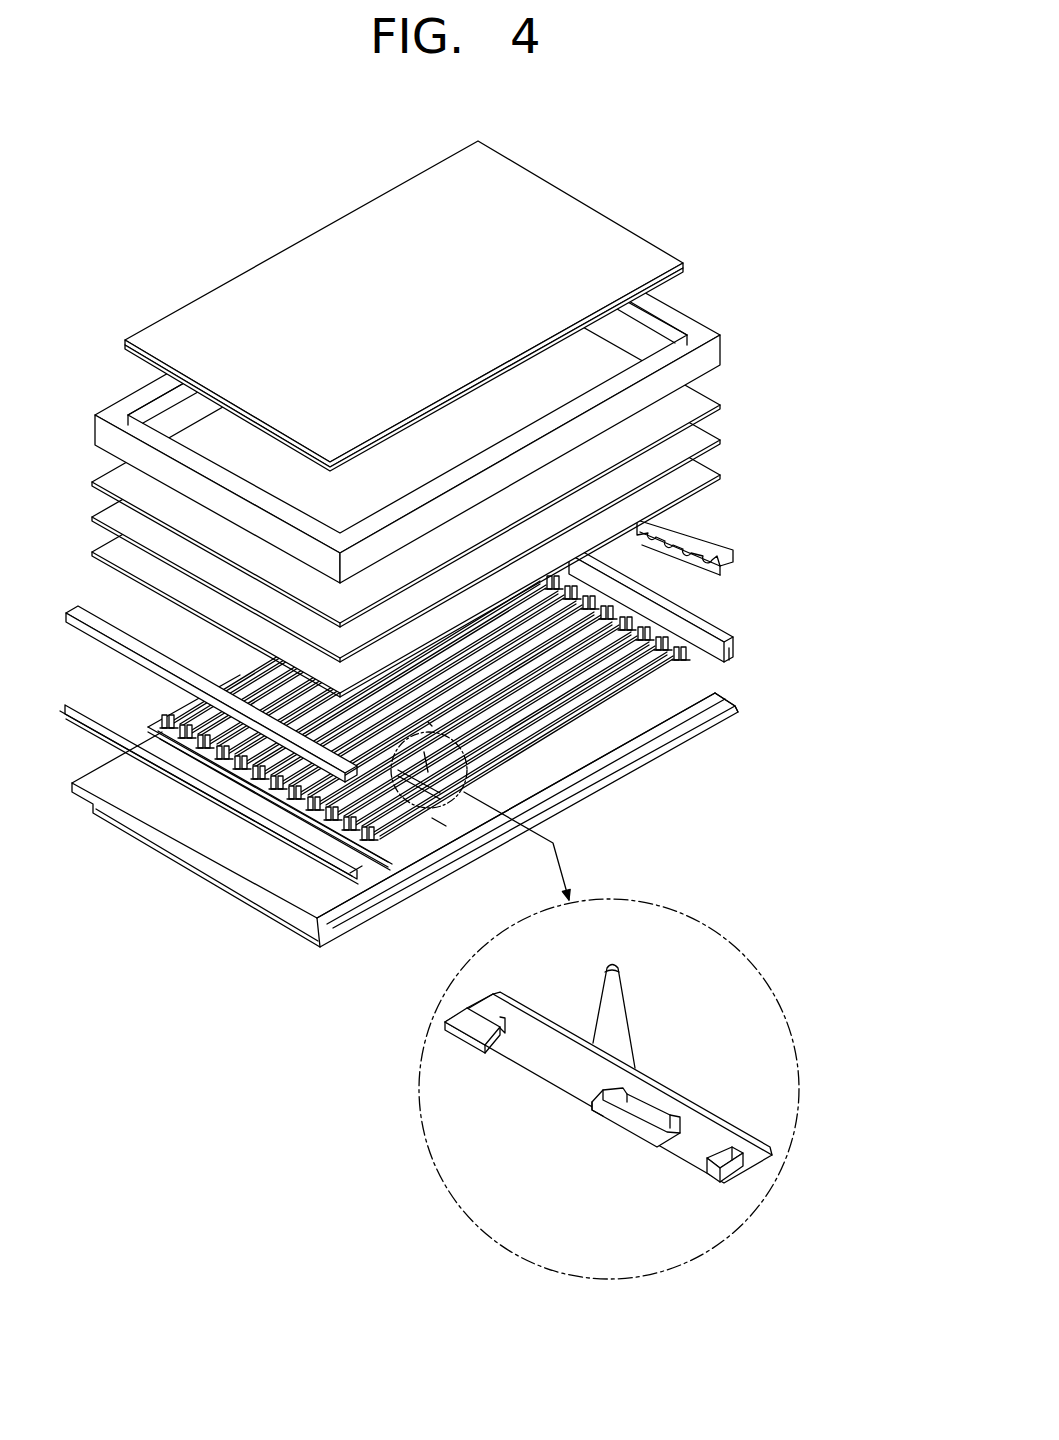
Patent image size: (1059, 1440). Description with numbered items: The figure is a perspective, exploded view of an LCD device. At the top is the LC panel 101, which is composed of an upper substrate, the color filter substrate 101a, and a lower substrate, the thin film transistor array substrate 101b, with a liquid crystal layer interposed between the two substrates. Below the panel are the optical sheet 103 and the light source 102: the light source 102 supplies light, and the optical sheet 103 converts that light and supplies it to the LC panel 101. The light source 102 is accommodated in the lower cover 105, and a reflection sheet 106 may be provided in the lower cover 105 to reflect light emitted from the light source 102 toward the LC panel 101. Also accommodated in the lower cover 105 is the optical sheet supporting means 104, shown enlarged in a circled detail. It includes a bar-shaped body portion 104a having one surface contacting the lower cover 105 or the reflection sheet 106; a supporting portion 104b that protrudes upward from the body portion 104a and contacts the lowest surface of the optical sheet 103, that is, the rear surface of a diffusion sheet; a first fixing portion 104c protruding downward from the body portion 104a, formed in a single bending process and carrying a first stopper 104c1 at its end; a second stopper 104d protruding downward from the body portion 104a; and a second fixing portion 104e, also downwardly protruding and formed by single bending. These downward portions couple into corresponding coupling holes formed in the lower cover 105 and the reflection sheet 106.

The LC panel 101 is at (467, 306).
The color filter substrate 101a is at (688, 256).
The thin film transistor (TFT) array substrate 101b is at (686, 268).
The light source 102 is at (660, 673).
The optical sheet 103 is at (723, 405).
The optical sheet supporting means 104 is at (723, 1068).
The body portion 104a is at (548, 1067).
The supporting portion 104b is at (613, 1013).
The first fixing portion 104c is at (643, 1128).
The first stopper 104c1 is at (593, 1108).
The second stopper 104d is at (727, 1170).
The second fixing portion 104e is at (472, 1032).
The lower cover 105 is at (725, 715).
The reflection sheet 106 is at (647, 742).